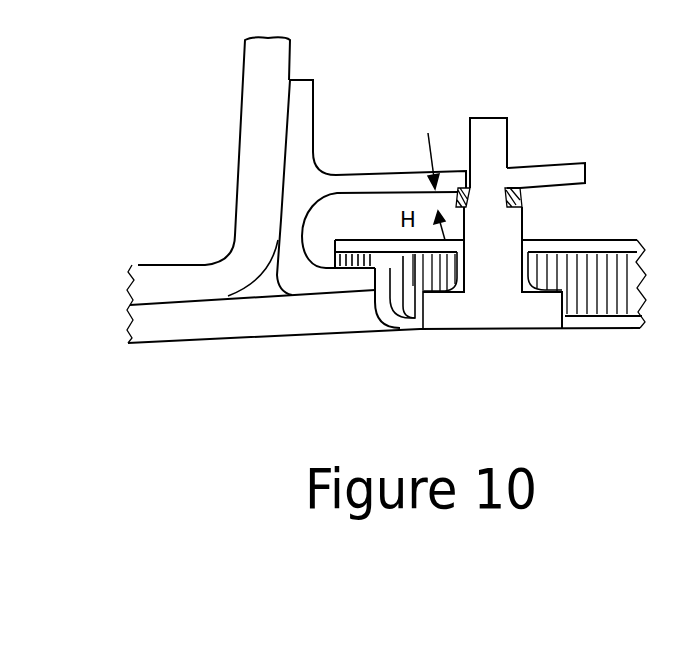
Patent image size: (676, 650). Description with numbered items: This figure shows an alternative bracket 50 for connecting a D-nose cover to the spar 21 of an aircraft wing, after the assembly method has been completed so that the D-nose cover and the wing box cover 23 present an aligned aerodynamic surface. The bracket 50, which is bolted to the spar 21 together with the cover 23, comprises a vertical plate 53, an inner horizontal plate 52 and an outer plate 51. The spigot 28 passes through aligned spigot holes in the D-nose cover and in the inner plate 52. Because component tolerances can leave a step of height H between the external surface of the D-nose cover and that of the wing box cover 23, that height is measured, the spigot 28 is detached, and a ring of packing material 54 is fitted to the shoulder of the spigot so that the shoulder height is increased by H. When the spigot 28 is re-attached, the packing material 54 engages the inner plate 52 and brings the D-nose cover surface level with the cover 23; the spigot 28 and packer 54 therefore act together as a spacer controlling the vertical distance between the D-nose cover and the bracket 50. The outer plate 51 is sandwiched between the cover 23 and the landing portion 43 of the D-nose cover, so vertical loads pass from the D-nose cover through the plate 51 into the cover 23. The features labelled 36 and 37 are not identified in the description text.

The spar 21 is at (182, 139).
The wing box cover 23 is at (230, 322).
The spigot 28 is at (497, 292).
The horizontal leg of bracket 36 is at (163, 275).
The vertical leg of bracket 37 is at (265, 165).
The landing portion 43 is at (343, 283).
The bracket 50 is at (333, 137).
The outer plate 51 is at (355, 258).
The inner plate 52 is at (377, 188).
The vertical plate 53 is at (300, 133).
The packing material 54 is at (517, 195).